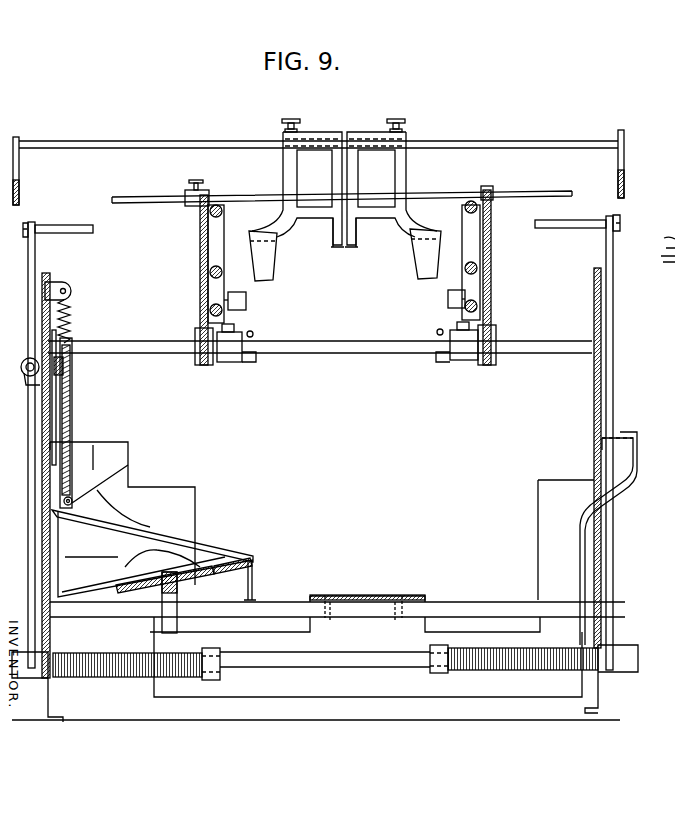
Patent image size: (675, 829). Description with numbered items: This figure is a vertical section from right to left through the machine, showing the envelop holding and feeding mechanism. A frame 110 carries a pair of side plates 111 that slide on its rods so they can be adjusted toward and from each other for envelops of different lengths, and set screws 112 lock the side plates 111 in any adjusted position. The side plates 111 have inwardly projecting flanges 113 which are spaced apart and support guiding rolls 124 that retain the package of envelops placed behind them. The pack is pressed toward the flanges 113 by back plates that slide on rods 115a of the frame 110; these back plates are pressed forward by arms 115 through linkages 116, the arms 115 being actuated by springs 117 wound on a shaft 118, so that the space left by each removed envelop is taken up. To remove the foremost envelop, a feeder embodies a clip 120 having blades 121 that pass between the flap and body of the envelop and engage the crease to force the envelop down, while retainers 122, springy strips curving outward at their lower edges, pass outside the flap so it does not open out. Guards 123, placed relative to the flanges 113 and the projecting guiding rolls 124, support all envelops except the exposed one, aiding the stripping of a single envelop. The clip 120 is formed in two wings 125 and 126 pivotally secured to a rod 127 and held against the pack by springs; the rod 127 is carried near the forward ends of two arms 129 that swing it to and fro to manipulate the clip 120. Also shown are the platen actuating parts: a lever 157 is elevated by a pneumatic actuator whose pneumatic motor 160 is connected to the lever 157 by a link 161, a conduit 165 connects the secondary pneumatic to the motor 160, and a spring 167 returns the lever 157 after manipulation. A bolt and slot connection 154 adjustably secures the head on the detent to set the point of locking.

The frame 110 is at (522, 195).
The side plates 111 is at (200, 290).
The set screws 112 is at (189, 184).
The inwardly projecting flanges 113 is at (223, 227).
The arms 115 is at (36, 261).
The rods 115a is at (209, 226).
The linkages 116 is at (48, 226).
The springs 117 is at (140, 676).
The shaft 118 is at (392, 657).
The clip 120 is at (403, 131).
The blades 121 is at (268, 272).
The retainers 122 is at (352, 249).
The guards 123 is at (249, 365).
The guiding rolls 124 is at (247, 302).
The wing 125 is at (284, 178).
The wing 126 is at (406, 173).
The rod 127 is at (182, 142).
The arms 129 is at (20, 183).
The bolt and slot connection 154 is at (205, 543).
The lever 157 is at (32, 359).
The pneumatic motor 160 is at (151, 519).
The link 161 is at (72, 400).
The conduit 165 is at (168, 620).
The spring 167 is at (69, 320).